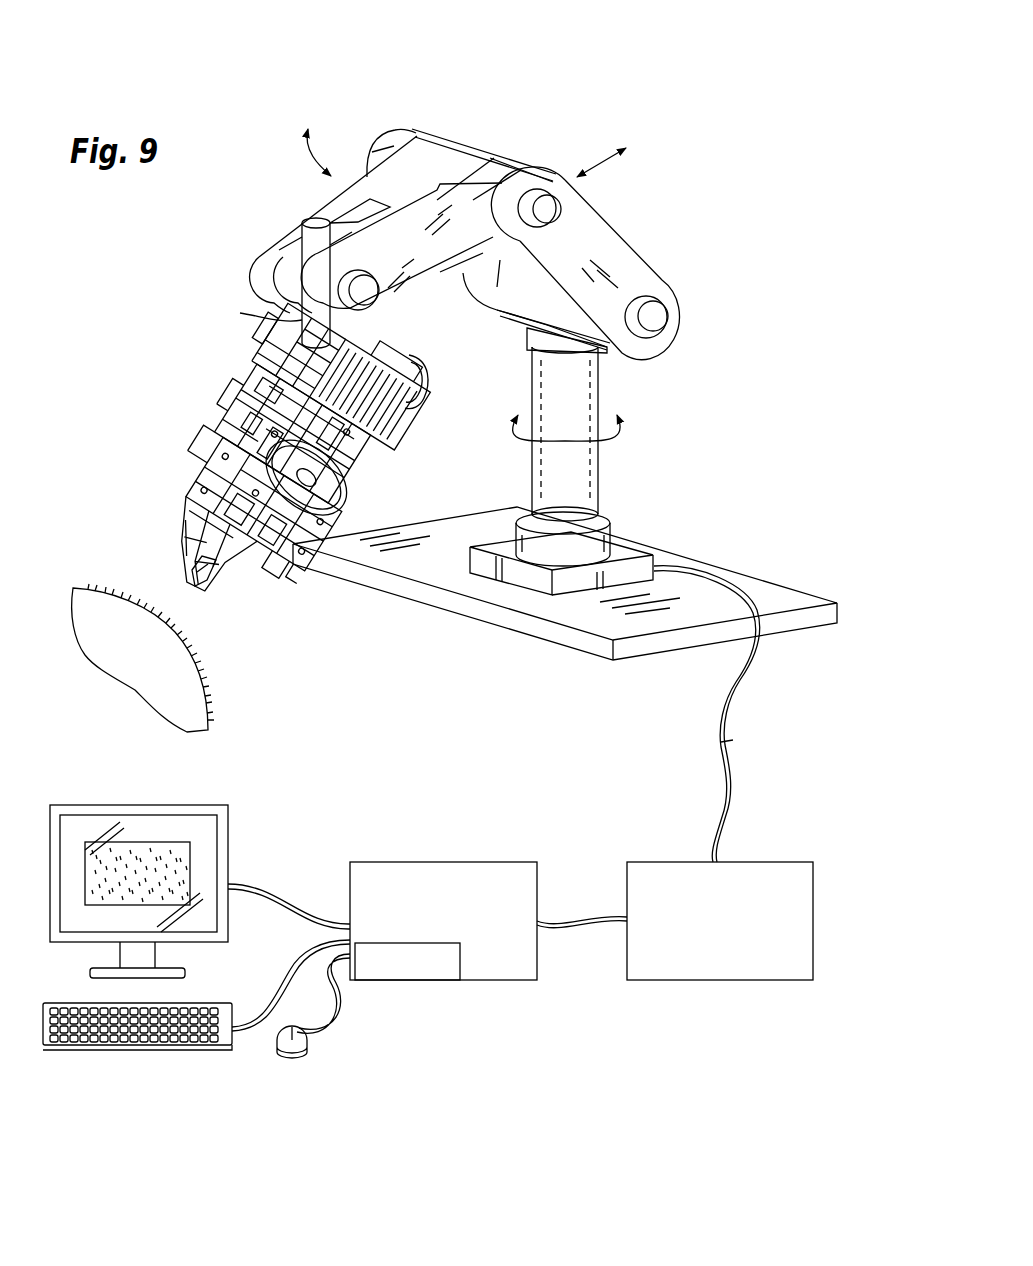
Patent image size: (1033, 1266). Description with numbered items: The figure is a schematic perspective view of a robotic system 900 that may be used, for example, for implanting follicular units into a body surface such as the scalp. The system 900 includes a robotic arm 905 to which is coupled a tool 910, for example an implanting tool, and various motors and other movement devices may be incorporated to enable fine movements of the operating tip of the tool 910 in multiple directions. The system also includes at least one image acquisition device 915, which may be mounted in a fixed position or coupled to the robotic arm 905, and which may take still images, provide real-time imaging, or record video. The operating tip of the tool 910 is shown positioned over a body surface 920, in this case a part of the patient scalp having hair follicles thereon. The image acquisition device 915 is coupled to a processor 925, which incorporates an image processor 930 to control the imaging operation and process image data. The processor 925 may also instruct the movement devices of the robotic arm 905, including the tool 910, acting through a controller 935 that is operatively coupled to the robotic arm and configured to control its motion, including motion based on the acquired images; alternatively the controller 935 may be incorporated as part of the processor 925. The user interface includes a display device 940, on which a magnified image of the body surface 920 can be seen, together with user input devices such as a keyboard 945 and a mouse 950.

The robotic system 900 is at (553, 104).
The robotic arm 905 is at (622, 231).
The tool 910 is at (180, 578).
The image acquisition device 915 is at (237, 438).
The body surface 920 is at (150, 850).
The processor 925 is at (485, 862).
The image processor 930 is at (407, 962).
The controller 935 is at (772, 862).
The display device 940 is at (228, 831).
The keyboard 945 is at (107, 1057).
The mouse 950 is at (295, 1062).